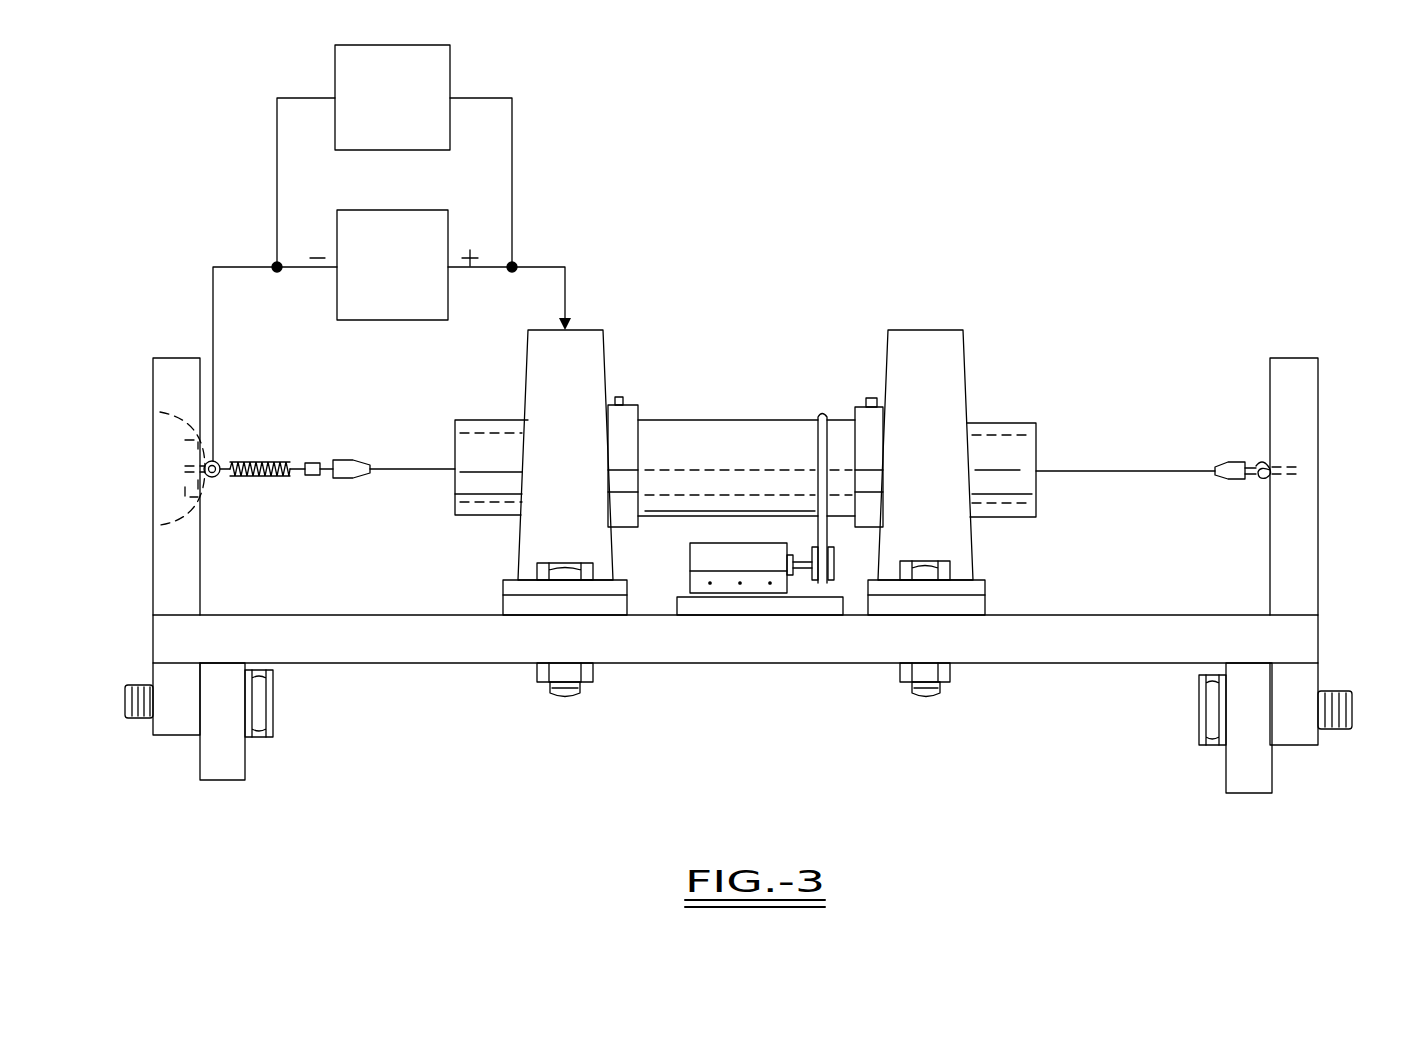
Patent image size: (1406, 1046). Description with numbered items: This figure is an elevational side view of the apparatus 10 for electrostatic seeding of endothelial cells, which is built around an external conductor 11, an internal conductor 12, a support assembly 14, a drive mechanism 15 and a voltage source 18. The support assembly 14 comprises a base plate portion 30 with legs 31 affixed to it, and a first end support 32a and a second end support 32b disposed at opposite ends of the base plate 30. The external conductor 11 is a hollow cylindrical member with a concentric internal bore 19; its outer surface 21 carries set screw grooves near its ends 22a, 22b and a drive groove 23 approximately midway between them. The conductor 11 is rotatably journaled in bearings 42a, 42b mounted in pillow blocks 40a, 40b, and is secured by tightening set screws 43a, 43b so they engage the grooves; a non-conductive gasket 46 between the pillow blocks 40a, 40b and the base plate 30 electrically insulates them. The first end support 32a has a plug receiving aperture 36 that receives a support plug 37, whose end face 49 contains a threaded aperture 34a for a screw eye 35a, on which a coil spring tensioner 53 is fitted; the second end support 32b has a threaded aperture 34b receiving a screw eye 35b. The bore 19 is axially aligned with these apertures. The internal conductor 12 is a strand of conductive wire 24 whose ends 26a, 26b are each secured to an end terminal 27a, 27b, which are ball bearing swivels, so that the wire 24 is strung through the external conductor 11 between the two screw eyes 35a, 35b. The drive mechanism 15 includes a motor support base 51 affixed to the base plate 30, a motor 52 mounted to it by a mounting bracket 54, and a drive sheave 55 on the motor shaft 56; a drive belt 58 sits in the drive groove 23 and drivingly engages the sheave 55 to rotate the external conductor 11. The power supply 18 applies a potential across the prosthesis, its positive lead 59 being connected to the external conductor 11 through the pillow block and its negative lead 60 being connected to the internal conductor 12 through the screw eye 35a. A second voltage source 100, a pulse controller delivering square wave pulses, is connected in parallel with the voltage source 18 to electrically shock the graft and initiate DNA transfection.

The apparatus for electrostatic seeding of endothelial cells 10 is at (1003, 185).
The second voltage source 100 is at (420, 116).
The voltage source 18 is at (410, 285).
The negative lead 60 is at (243, 267).
The positive lead 59 is at (546, 267).
The first end support 32a is at (160, 357).
The second end support 32b is at (1310, 357).
The legs 31 is at (245, 768).
The base plate portion 30 is at (755, 665).
The non-conductive gasket 46 is at (503, 597).
The pillow block 40a is at (604, 348).
The pillow block 40b is at (888, 350).
The end of external conductor 22a is at (460, 518).
The end of external conductor 22b is at (1032, 517).
The external conductor 11 is at (1013, 420).
The internal bore 19 is at (1025, 450).
The bearing 42a is at (612, 470).
The set screw 43a is at (618, 397).
The bearing 42b is at (884, 471).
The set screw 43b is at (870, 398).
The outer surface 21 is at (720, 412).
The drive belt 58 is at (818, 449).
The drive groove 23 is at (818, 412).
The drive mechanism 15 is at (737, 564).
The motor 52 is at (690, 548).
The mounting bracket 54 is at (690, 580).
The motor shaft 56 is at (797, 530).
The motor support base 51 is at (728, 605).
The drive sheave 55 is at (815, 583).
The internal conductor 12 is at (405, 455).
The end of wire 26a is at (368, 465).
The end terminal 27a is at (340, 460).
The coil spring tensioner 53 is at (268, 462).
The screw eye 35a is at (214, 478).
The threaded aperture 34a is at (160, 525).
The end face 49 is at (160, 412).
The plug receiving aperture 36 is at (185, 443).
The support plug 37 is at (185, 488).
The wire 24 is at (1118, 470).
The end of wire 26b is at (1223, 480).
The end terminal 27b is at (1233, 480).
The screw eye 35b is at (1262, 462).
The threaded aperture 34b is at (1285, 468).
The support assembly 14 is at (1025, 571).